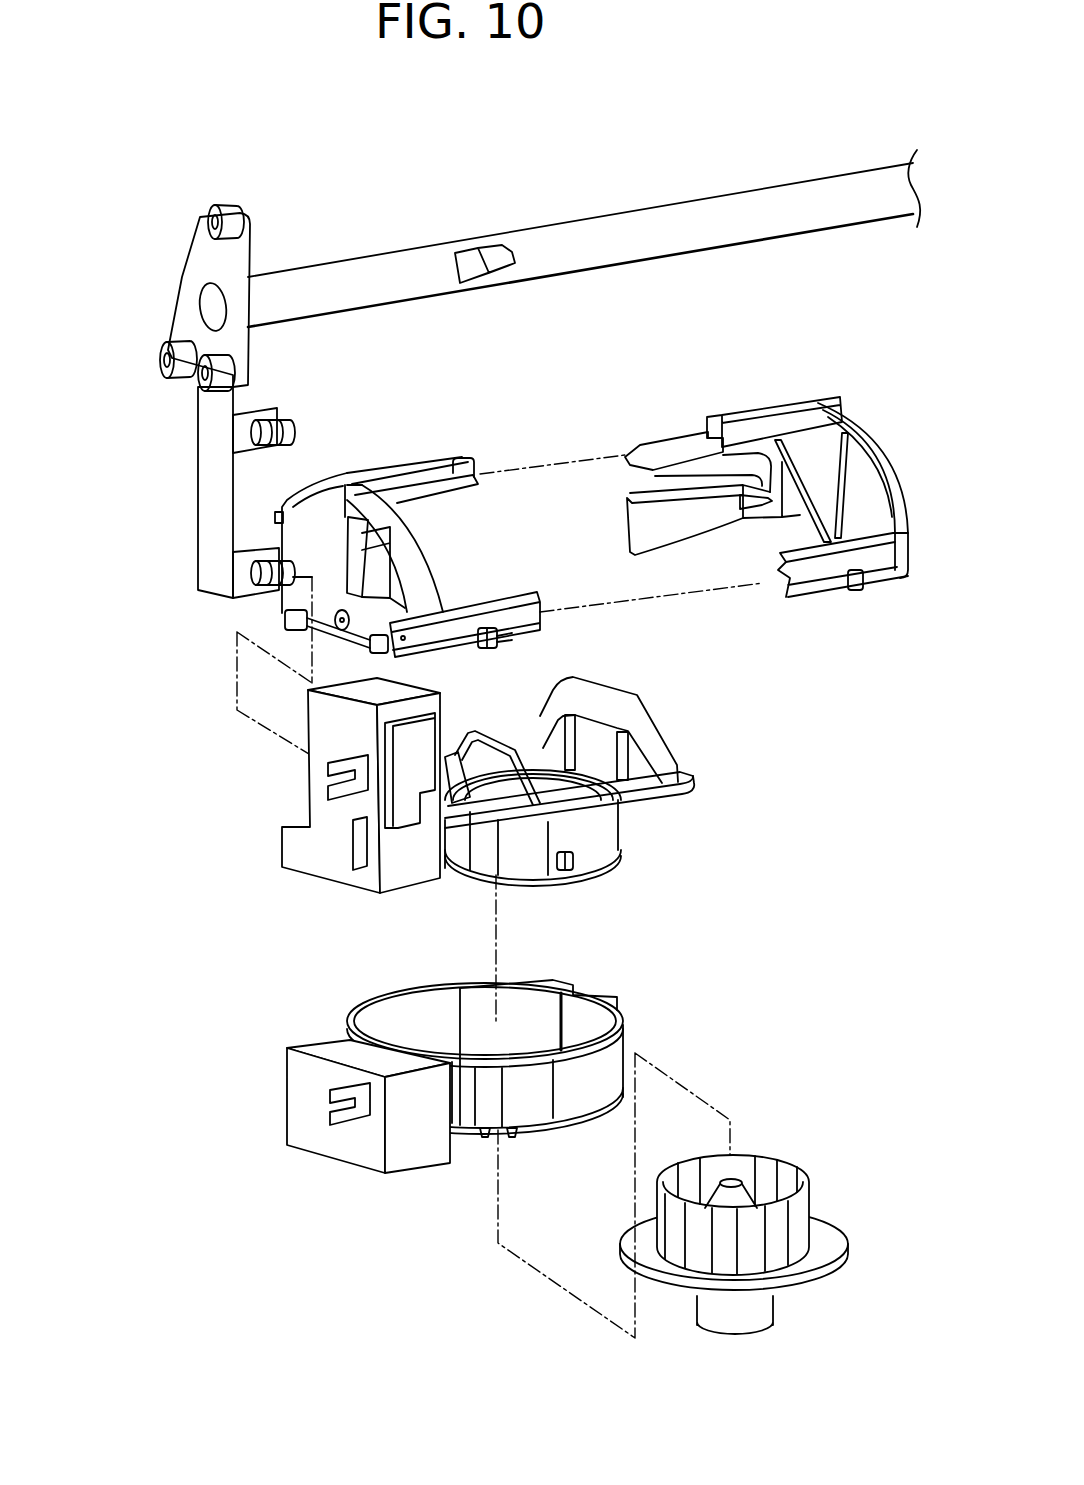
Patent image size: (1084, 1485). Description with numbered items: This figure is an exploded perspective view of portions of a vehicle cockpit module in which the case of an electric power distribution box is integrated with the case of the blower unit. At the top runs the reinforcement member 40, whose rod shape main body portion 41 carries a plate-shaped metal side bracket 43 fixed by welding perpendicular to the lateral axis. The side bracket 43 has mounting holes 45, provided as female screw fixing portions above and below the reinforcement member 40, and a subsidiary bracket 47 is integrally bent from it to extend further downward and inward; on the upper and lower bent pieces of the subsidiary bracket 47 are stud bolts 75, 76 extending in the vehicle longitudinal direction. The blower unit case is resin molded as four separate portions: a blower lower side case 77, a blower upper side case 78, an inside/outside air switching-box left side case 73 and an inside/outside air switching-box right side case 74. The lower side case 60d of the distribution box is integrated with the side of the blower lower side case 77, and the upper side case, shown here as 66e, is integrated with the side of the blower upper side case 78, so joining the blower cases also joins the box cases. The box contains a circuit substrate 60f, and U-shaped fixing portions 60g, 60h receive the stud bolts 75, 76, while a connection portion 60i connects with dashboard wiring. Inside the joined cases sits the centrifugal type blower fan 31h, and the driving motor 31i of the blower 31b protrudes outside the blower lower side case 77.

The reinforcement member 40 is at (756, 190).
The rod shape main body portion 41 is at (667, 226).
The side bracket 43 is at (208, 253).
The mounting holes 45 is at (213, 216).
The subsidiary bracket 47 is at (217, 498).
The inside/outside air switching-box left side case 73 is at (515, 630).
The inside/outside air switching-box right side case 74 is at (827, 572).
The stud bolt 75 is at (292, 431).
The stud bolt 76 is at (263, 585).
The fixing portion 60h is at (340, 772).
The circuit substrate 60f is at (355, 833).
The stepped portion 66e is at (337, 860).
The connection portion 60i is at (418, 764).
The fixing portion 60g is at (353, 1127).
The lower side case 60d is at (413, 1140).
The blower lower side case 77 is at (532, 1093).
The blower upper side case 78 is at (525, 845).
The blower 31b is at (826, 1203).
The centrifugal type blower fan 31h is at (748, 1155).
The driving motor 31i is at (753, 1317).